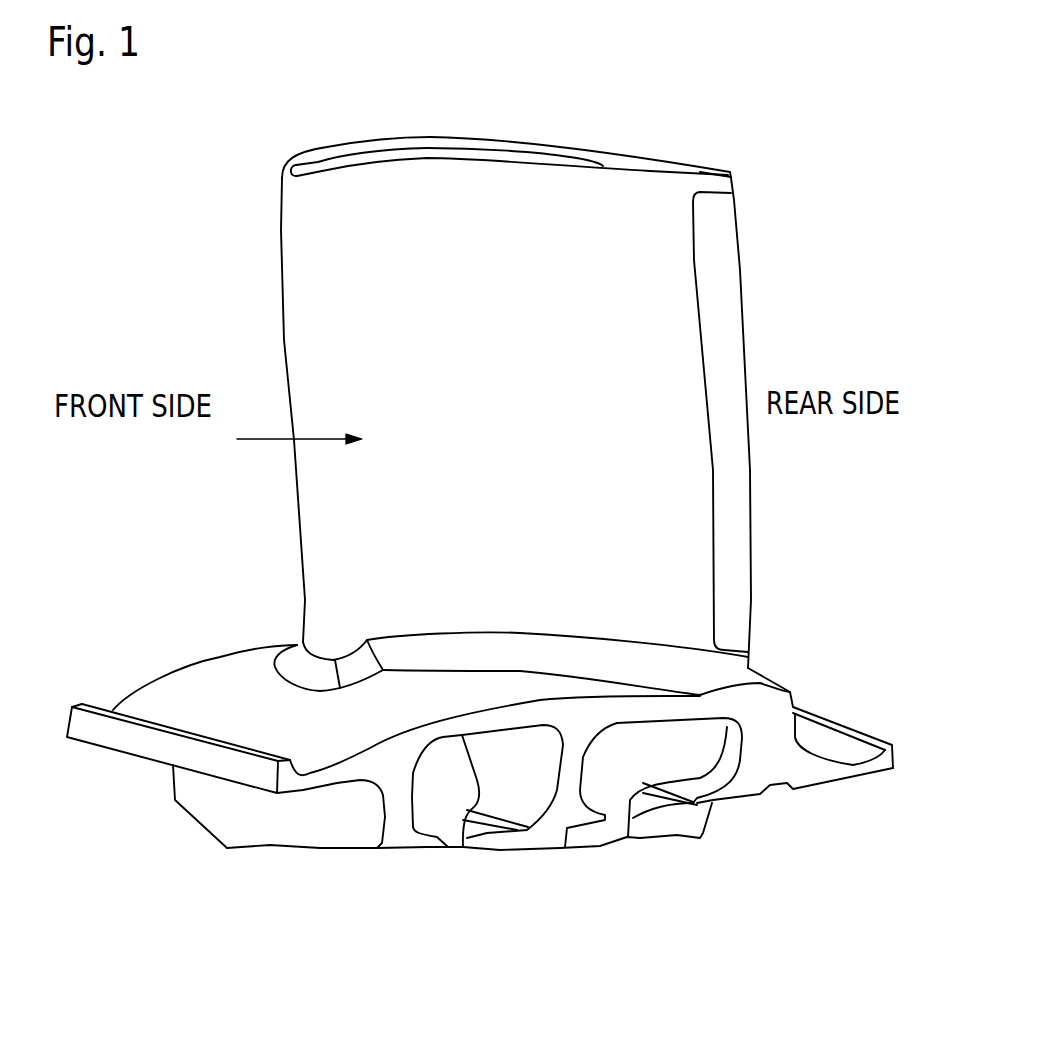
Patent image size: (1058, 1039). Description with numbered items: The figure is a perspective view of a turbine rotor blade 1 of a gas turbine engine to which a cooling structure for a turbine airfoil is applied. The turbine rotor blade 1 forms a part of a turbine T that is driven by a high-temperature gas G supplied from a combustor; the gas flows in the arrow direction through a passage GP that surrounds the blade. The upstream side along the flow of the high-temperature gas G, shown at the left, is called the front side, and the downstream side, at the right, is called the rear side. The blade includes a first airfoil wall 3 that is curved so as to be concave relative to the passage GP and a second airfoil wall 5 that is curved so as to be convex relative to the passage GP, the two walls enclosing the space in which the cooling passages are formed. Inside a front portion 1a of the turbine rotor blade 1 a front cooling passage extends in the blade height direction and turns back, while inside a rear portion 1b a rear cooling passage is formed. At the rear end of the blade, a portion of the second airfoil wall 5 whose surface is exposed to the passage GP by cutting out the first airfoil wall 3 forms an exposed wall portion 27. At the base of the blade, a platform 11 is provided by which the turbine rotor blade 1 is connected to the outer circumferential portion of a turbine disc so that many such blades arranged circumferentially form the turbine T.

The turbine rotor blade 1 is at (510, 373).
The front portion 1a is at (302, 230).
The rear portion 1b is at (738, 346).
The first airfoil wall 3 is at (448, 160).
The second airfoil wall 5 is at (495, 140).
The platform 11 is at (195, 686).
The exposed wall portion 27 is at (728, 288).
The turbine T is at (703, 157).
The high-temperature gas G is at (253, 440).
The passage for the high-temperature gas GP is at (238, 577).